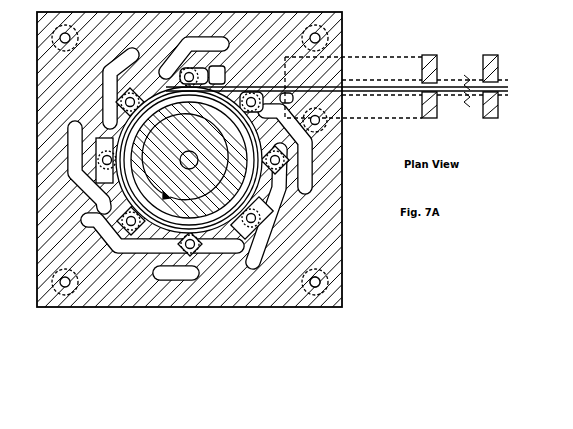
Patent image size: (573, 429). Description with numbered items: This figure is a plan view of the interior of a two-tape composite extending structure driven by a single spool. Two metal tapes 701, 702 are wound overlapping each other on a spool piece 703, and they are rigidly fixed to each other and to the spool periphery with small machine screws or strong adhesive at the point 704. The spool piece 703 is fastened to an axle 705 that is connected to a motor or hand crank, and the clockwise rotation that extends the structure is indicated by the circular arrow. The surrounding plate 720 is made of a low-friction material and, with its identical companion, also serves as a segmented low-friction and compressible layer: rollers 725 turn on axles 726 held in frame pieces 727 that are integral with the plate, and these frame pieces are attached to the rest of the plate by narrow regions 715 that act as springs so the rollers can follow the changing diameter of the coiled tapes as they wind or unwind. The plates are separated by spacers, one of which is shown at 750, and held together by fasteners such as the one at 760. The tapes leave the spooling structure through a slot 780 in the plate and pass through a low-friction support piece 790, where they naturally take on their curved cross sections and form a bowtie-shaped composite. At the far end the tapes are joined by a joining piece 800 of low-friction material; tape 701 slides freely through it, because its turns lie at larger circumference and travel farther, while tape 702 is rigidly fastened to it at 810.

The metal tape 701 is at (170, 87).
The metal tape 702 is at (203, 103).
The spool piece 703 is at (128, 127).
The fastening point 704 is at (200, 137).
The axle 705 is at (197, 158).
The narrow region 715 is at (166, 255).
The plate 720 is at (342, 25).
The roller 725 is at (191, 254).
The axle 726 is at (197, 249).
The frame piece 727 is at (209, 246).
The spacer 750 is at (315, 290).
The fastener 760 is at (320, 283).
The slot 780 is at (310, 80).
The support piece 790 is at (430, 55).
The joining piece 800 is at (490, 55).
The fastening point 810 is at (492, 113).